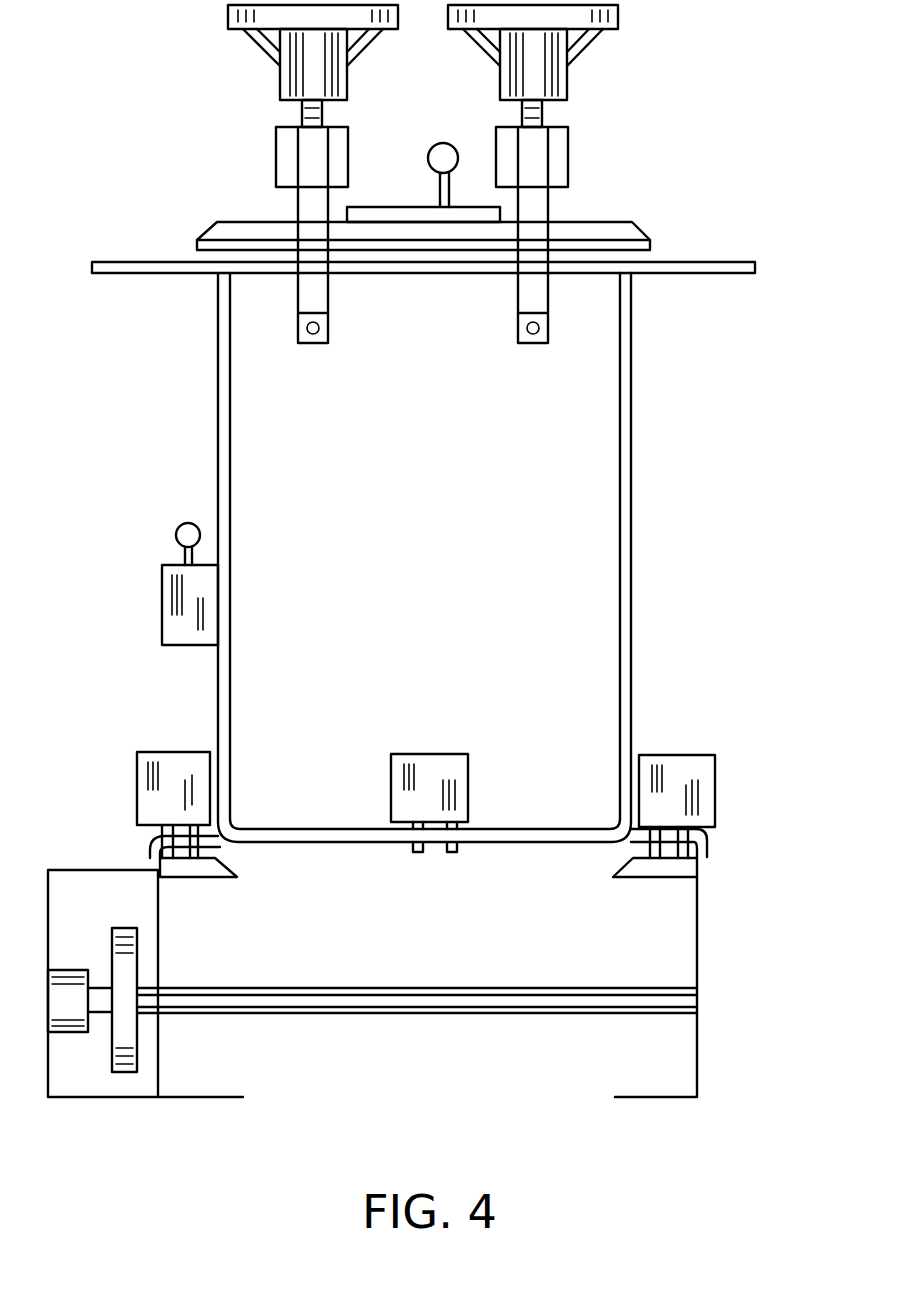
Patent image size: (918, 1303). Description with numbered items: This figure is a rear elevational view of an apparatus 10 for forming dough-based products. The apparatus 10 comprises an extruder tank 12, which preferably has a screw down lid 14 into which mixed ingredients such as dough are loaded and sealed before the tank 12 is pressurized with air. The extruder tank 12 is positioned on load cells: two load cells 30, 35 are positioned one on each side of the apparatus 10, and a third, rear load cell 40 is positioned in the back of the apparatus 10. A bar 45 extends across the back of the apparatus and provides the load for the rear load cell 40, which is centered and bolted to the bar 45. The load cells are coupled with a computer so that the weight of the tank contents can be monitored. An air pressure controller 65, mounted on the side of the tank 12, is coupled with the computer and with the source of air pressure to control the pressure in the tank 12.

The apparatus 10 is at (658, 455).
The extruder tank 12 is at (602, 367).
The screw down lid 14 is at (618, 228).
The load cell 30 is at (172, 792).
The load cell 35 is at (703, 777).
The rear load cell 40 is at (462, 772).
The bar 45 is at (290, 828).
The air pressure controller 65 is at (168, 585).